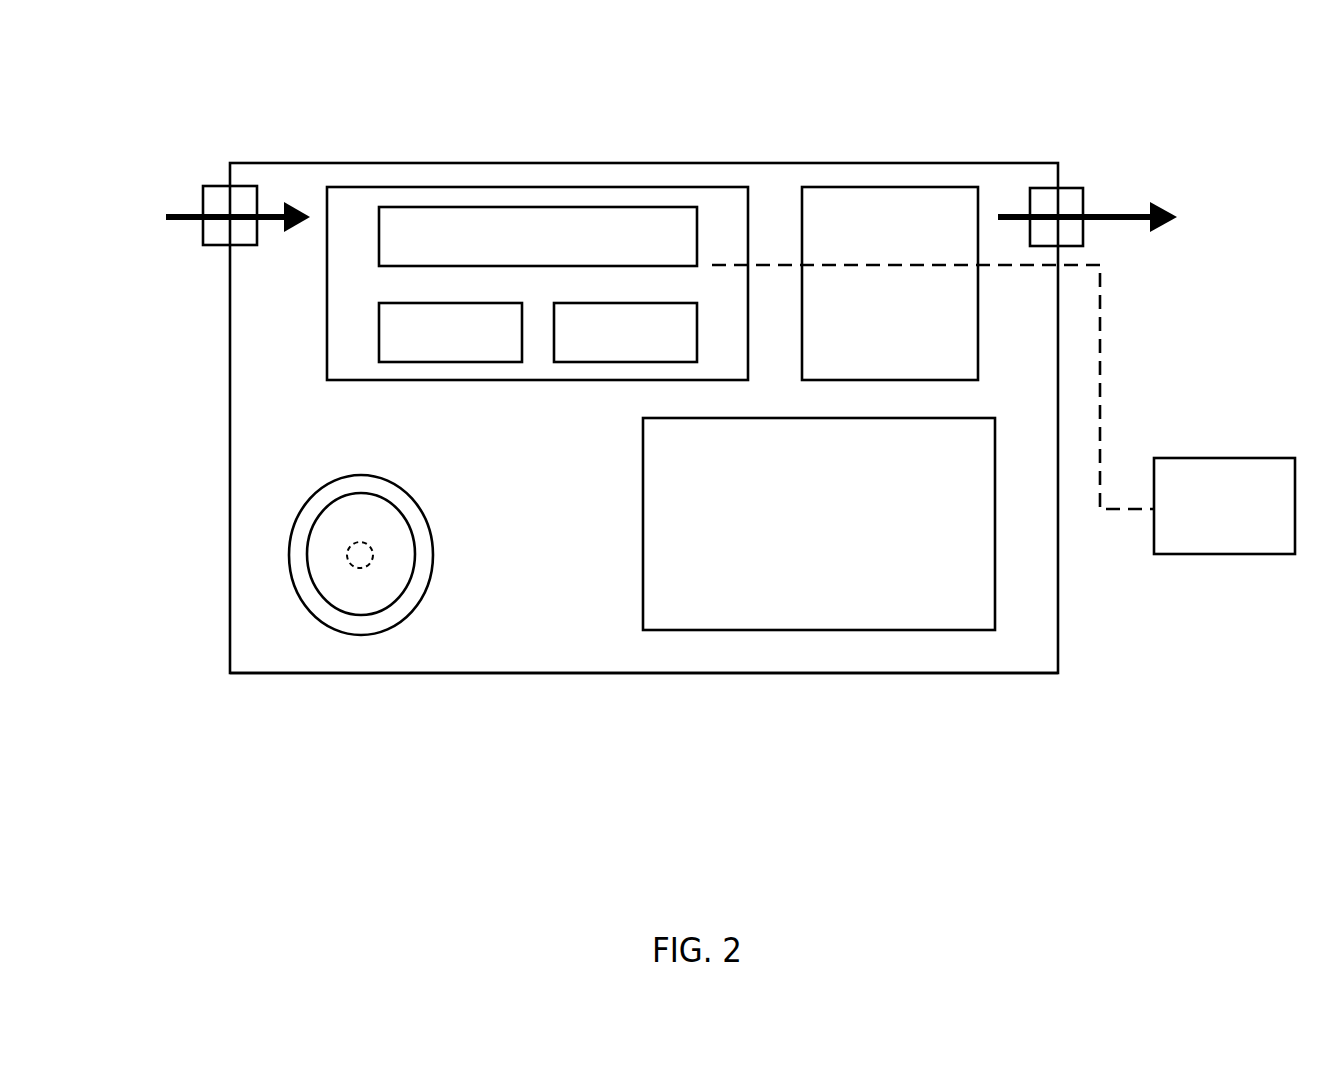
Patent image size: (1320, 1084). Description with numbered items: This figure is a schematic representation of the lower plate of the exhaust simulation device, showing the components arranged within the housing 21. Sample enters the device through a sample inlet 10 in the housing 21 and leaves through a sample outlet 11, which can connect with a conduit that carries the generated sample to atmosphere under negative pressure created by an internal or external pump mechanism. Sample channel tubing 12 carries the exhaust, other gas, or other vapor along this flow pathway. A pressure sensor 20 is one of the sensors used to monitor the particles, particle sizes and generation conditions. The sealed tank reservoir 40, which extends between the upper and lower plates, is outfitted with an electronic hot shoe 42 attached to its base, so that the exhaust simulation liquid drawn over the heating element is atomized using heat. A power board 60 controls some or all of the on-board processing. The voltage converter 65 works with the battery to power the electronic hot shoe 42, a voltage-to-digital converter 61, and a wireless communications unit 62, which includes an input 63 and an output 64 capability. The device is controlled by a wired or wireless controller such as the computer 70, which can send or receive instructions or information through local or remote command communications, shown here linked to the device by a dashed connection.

The sample inlet 10 is at (201, 174).
The sample outlet 11 is at (1078, 176).
The sample channel tubing 12 is at (278, 220).
The pressure sensor 20 is at (917, 145).
The housing 21 is at (840, 673).
The sealed tank reservoir 40 is at (367, 632).
The electronic hot shoe 42 is at (320, 572).
The power board 60 is at (965, 607).
The voltage-to-digital converter 61 is at (738, 366).
The wireless communications unit 62 is at (561, 251).
The input 63 is at (639, 346).
The output 64 is at (464, 346).
The voltage converter 65 is at (947, 366).
The computer 70 is at (1242, 525).